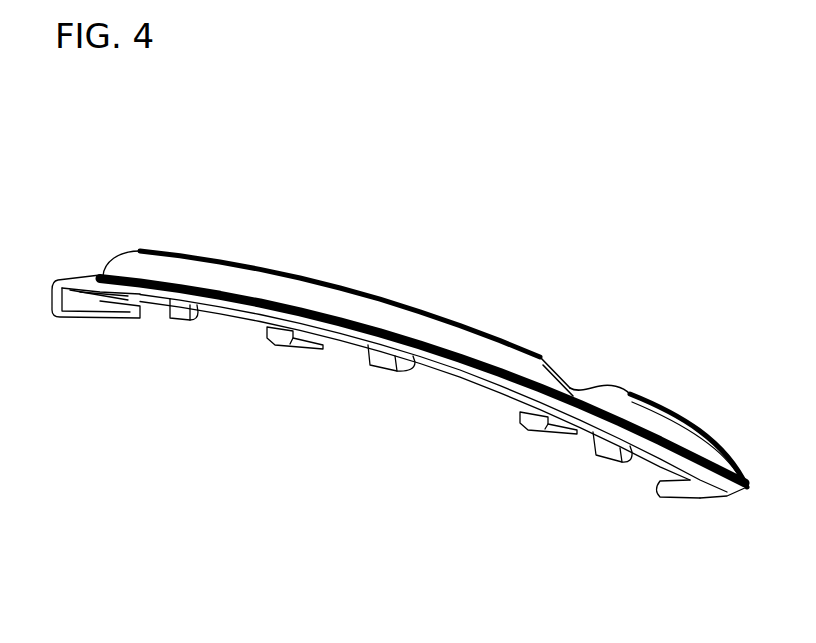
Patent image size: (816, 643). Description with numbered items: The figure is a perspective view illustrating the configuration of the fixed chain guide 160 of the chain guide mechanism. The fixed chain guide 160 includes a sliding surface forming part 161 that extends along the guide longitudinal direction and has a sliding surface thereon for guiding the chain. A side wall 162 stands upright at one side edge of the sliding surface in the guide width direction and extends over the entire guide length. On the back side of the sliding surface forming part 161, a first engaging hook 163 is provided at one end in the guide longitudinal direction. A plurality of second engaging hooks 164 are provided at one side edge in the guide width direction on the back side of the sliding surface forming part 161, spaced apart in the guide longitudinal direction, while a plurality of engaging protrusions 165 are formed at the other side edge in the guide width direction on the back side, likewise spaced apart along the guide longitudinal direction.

The fixed chain guide 160 is at (545, 357).
The sliding surface forming part 161 is at (482, 393).
The side wall 162 is at (413, 318).
The first engaging hook 163 is at (98, 312).
The second engaging hooks 164 is at (283, 346).
The engaging protrusions 165 is at (187, 308).